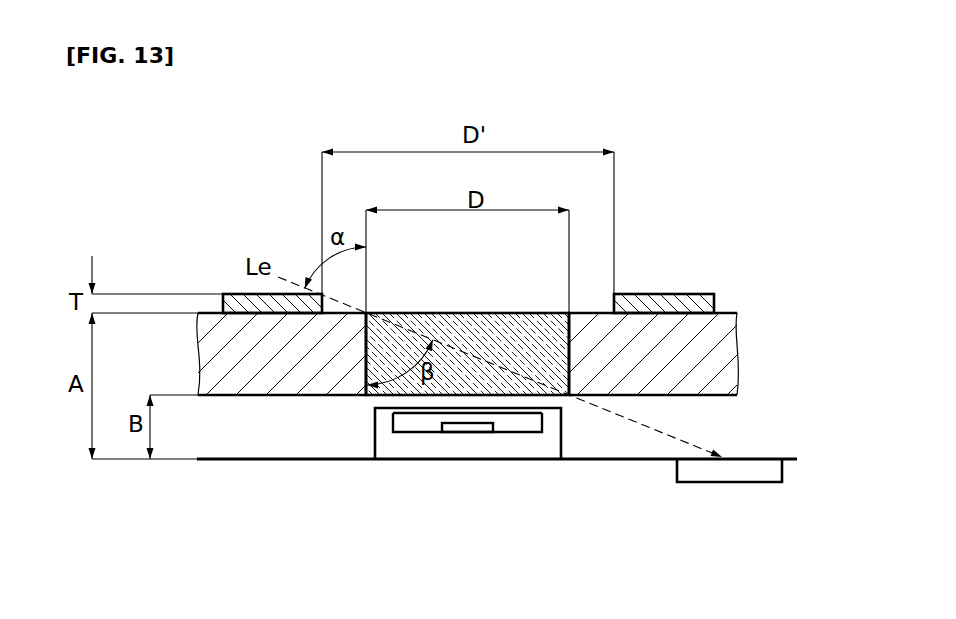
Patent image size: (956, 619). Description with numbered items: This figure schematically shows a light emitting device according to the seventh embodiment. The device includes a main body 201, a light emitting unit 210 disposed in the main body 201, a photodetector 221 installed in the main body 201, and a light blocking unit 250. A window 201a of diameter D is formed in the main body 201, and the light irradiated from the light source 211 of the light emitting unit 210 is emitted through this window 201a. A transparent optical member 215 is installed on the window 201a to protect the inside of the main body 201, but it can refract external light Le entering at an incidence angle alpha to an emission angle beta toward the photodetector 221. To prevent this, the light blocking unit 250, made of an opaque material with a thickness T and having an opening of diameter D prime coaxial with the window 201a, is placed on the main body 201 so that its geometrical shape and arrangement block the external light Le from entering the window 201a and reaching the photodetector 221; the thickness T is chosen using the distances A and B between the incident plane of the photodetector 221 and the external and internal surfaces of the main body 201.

The main body 201 is at (287, 382).
The window 201a is at (562, 313).
The optical member 215 is at (447, 313).
The light blocking unit 250 is at (661, 298).
The light emitting unit 210 is at (523, 468).
The light source 211 is at (460, 430).
The photodetector 221 is at (757, 483).